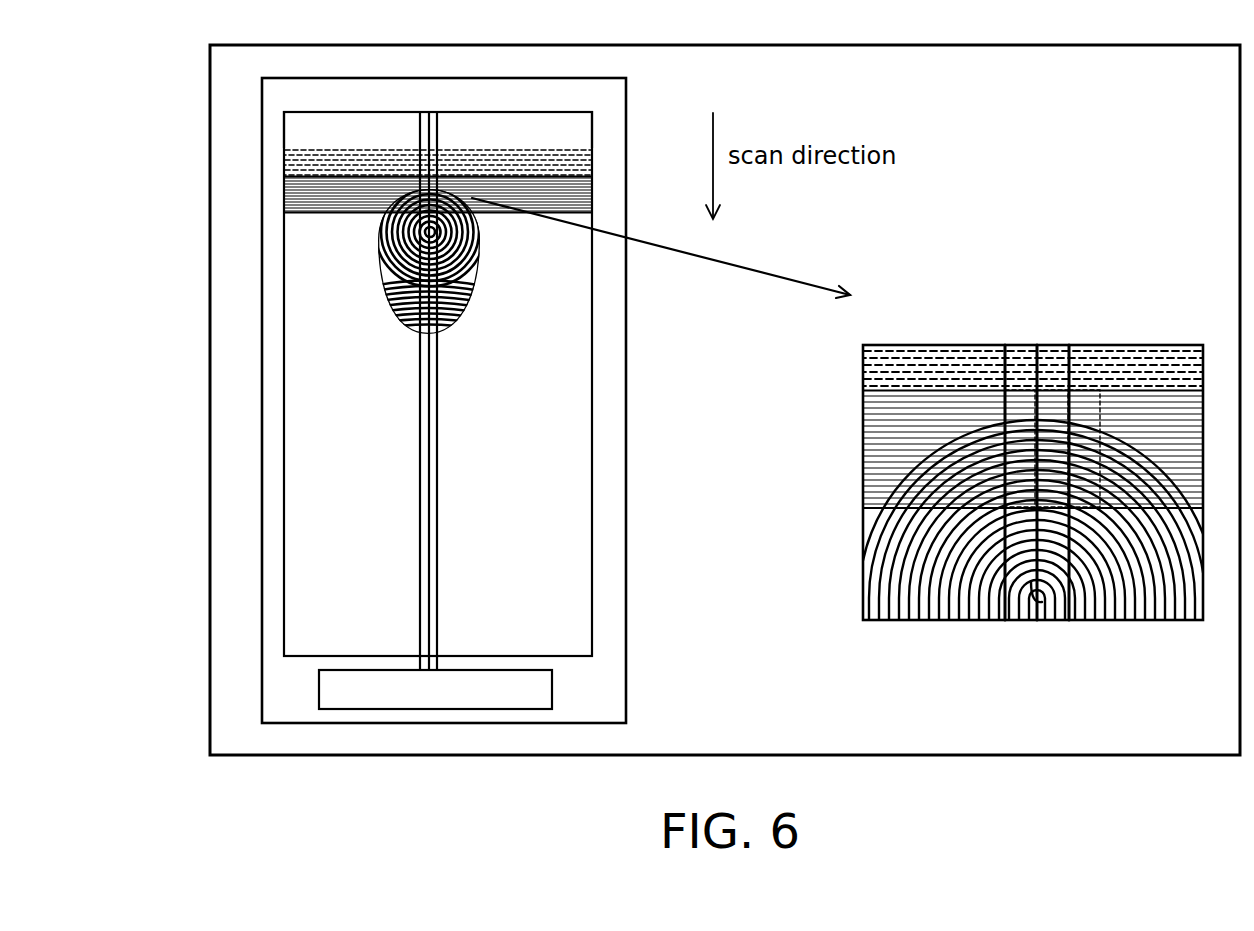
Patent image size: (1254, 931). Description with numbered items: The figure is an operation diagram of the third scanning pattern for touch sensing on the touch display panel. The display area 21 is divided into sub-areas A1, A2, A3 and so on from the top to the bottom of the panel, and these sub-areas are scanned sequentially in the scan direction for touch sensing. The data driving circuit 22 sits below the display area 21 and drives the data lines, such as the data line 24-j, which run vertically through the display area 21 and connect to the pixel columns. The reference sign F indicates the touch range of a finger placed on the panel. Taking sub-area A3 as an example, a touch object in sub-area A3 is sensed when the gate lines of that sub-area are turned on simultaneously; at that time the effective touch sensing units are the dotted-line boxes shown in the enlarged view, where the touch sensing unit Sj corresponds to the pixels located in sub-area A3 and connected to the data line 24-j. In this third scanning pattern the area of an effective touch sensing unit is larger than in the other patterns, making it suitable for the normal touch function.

The display area 21 is at (593, 465).
The data driving circuit 22 is at (552, 688).
The data line 24-j is at (420, 529).
The sub-area A1 is at (582, 132).
The sub-area A2 is at (588, 162).
The sub-area A3 is at (585, 198).
The touch range of a finger F is at (383, 262).
The touch sensing unit Sj is at (1013, 388).